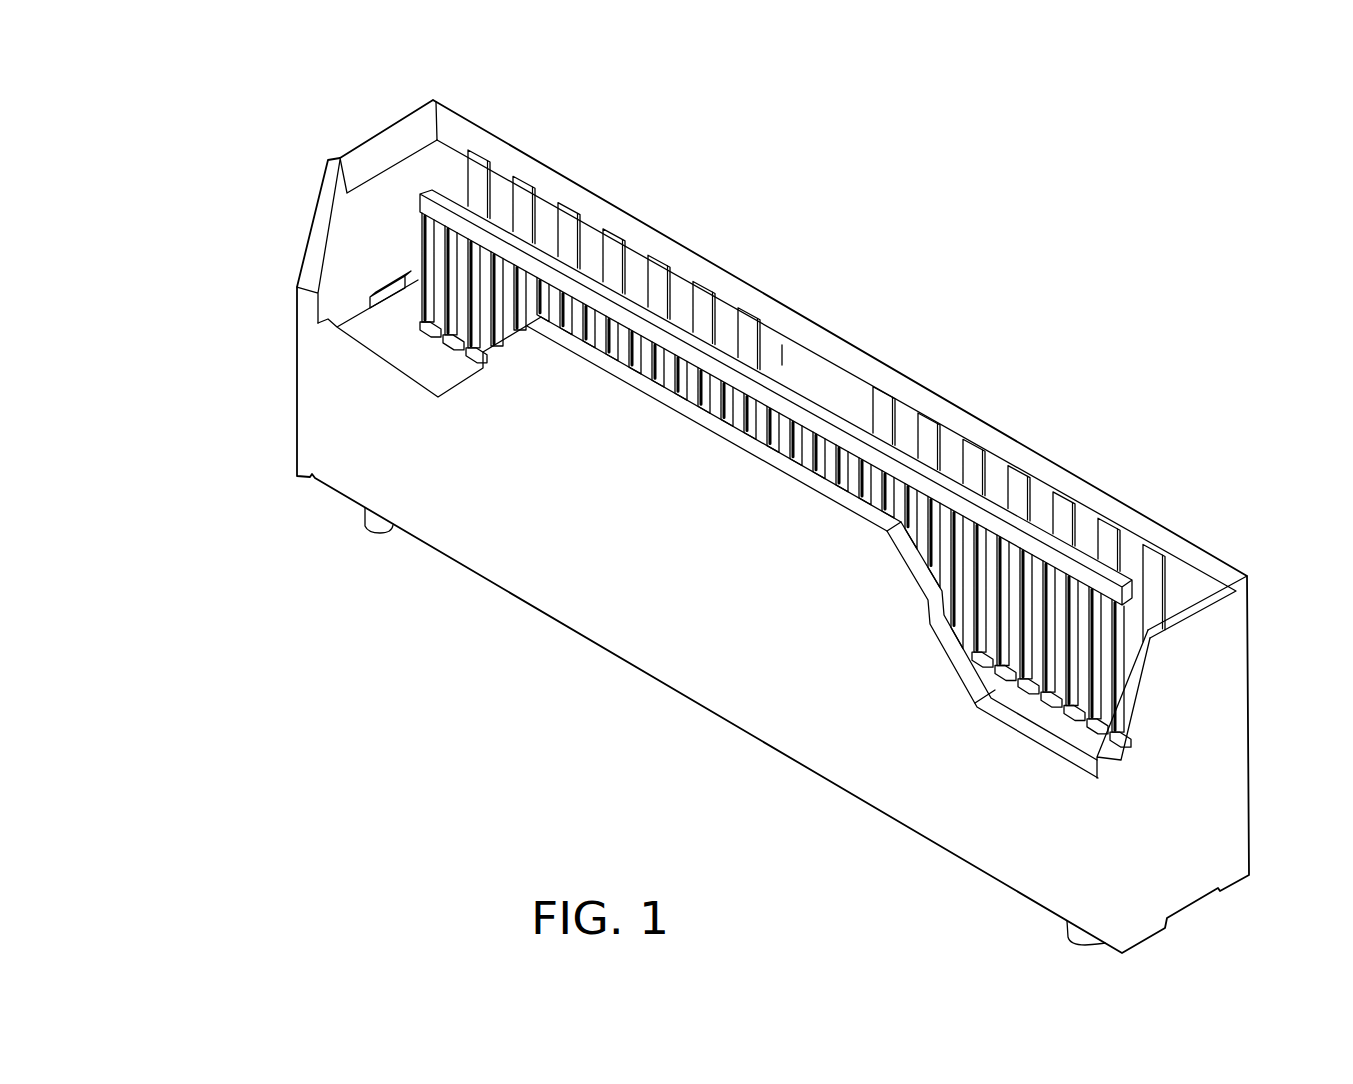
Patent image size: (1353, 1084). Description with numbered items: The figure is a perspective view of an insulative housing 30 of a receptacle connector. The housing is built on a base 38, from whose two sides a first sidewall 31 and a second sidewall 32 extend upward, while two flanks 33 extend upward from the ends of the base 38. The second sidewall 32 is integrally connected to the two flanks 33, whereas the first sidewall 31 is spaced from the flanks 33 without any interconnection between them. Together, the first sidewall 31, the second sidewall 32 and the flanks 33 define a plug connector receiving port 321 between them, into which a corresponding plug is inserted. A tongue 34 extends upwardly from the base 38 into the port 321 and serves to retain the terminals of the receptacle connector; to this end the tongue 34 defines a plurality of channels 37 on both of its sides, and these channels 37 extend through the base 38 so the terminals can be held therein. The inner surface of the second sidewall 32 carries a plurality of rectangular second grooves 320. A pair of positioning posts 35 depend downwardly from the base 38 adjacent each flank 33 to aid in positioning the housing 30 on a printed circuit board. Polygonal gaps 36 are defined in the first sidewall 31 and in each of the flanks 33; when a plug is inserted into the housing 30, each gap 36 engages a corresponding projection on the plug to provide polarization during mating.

The insulative housing 30 is at (978, 403).
The first sidewall 31 is at (660, 523).
The second sidewall 32 is at (807, 337).
The second grooves 320 is at (614, 257).
The plug connector receiving port 321 is at (782, 360).
The flanks 33 is at (390, 150).
The tongue 34 is at (478, 218).
The positioning posts 35 is at (377, 527).
The polygonal gaps 36 is at (318, 238).
The channels 37 is at (458, 290).
The base 38 is at (1045, 725).